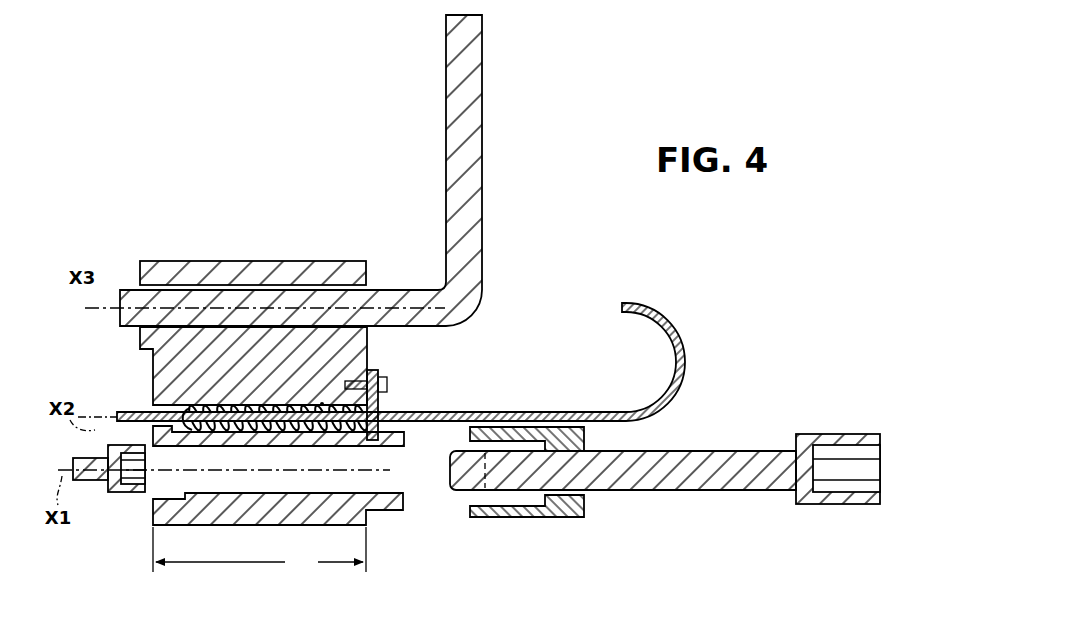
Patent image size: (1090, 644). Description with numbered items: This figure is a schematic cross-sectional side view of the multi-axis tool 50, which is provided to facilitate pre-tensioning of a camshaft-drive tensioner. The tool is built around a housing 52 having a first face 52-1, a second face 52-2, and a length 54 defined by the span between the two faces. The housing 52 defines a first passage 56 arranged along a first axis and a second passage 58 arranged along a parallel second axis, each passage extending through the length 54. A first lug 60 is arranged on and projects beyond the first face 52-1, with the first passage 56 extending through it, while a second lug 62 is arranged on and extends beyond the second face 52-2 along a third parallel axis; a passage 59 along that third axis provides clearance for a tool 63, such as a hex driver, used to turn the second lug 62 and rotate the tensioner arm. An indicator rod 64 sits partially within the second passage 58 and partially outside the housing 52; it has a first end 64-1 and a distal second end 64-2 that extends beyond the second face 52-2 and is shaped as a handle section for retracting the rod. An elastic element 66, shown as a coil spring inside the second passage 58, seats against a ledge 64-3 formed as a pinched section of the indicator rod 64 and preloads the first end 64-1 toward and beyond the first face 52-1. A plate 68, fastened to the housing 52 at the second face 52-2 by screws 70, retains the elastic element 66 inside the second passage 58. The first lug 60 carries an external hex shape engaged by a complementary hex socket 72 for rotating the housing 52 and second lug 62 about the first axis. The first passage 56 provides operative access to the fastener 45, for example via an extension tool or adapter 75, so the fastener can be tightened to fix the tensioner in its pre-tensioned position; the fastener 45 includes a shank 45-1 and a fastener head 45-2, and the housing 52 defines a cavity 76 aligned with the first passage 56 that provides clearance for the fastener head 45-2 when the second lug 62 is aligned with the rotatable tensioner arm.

The fastener 45 is at (150, 449).
The shank 45-1 is at (88, 481).
The fastener head 45-2 is at (822, 434).
The multi-axis tool 50 is at (282, 244).
The housing 52 is at (340, 261).
The first face 52-1 is at (374, 513).
The second face 52-2 is at (156, 506).
The length 54 is at (259, 549).
The first passage 56 is at (228, 497).
The second passage 58 is at (322, 403).
The passage 59 is at (372, 280).
The first lug 60 is at (408, 500).
The second lug 62 is at (140, 270).
The tool 63 is at (470, 184).
The indicator rod 64 is at (497, 412).
The first end 64-1 is at (115, 414).
The second end 64-2 is at (625, 303).
The ledge 64-3 is at (190, 410).
The elastic element 66 is at (300, 432).
The plate 68 is at (380, 400).
The screws 70 is at (388, 385).
The hex socket 72 is at (588, 430).
The extension tool or adapter 75 is at (756, 450).
The cavity 76 is at (163, 498).